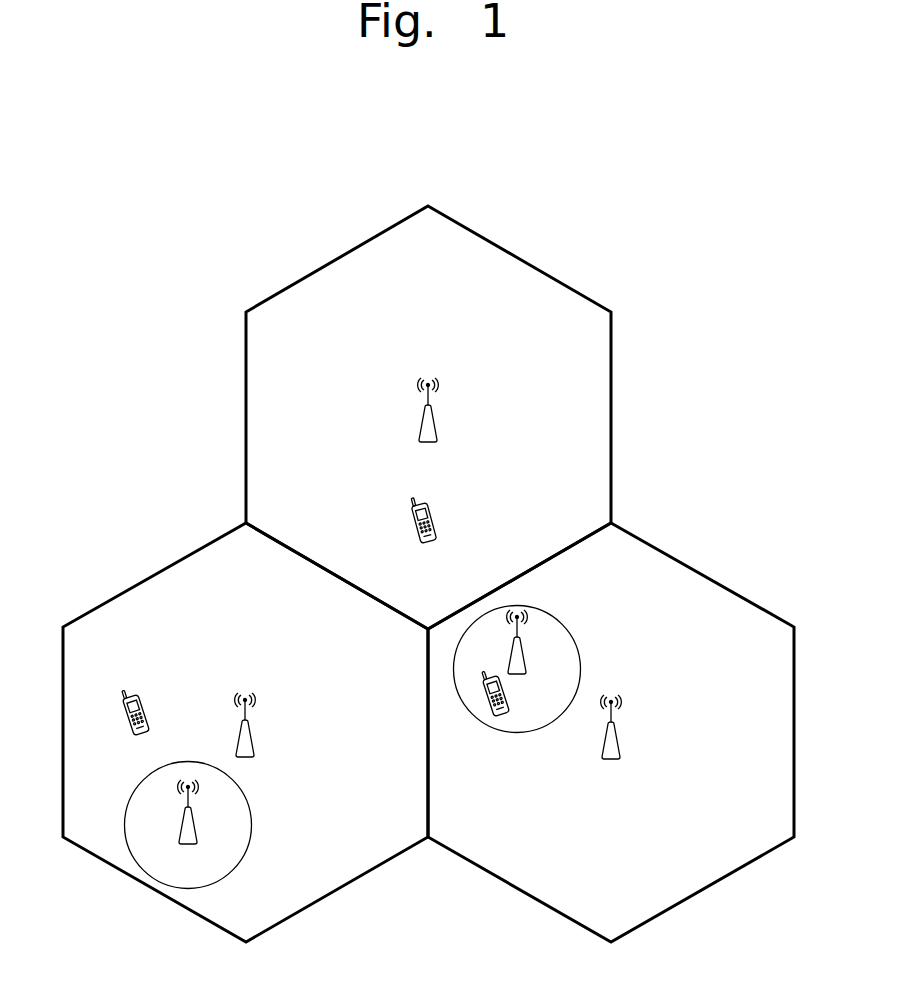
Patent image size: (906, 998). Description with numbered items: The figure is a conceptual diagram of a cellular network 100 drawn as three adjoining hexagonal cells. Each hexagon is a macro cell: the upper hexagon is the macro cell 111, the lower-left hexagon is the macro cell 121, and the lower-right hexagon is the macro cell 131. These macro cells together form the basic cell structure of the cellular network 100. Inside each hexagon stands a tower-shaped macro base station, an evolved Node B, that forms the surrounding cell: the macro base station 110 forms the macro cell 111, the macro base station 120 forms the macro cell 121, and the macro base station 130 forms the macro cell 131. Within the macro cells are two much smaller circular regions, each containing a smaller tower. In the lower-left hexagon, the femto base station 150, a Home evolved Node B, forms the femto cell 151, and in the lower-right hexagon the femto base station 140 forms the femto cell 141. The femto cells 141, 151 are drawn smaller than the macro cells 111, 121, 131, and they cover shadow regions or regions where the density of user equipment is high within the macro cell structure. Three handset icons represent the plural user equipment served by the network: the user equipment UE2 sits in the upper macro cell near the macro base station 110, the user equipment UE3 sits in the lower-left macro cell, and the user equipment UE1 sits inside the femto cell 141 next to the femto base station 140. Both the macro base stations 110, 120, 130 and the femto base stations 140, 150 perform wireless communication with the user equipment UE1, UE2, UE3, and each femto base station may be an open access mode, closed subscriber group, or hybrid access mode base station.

The cellular network 100 is at (717, 181).
The macro cell 111 is at (521, 254).
The macro cell 121 is at (157, 568).
The macro cell 131 is at (702, 570).
The macro base station 110 is at (437, 423).
The macro base station 120 is at (255, 737).
The macro base station 130 is at (619, 737).
The femto base station 140 is at (526, 654).
The femto cell 141 is at (580, 653).
The femto base station 150 is at (197, 823).
The femto cell 151 is at (250, 797).
The user equipment UE1 is at (490, 719).
The user equipment UE2 is at (436, 517).
The user equipment UE3 is at (145, 702).